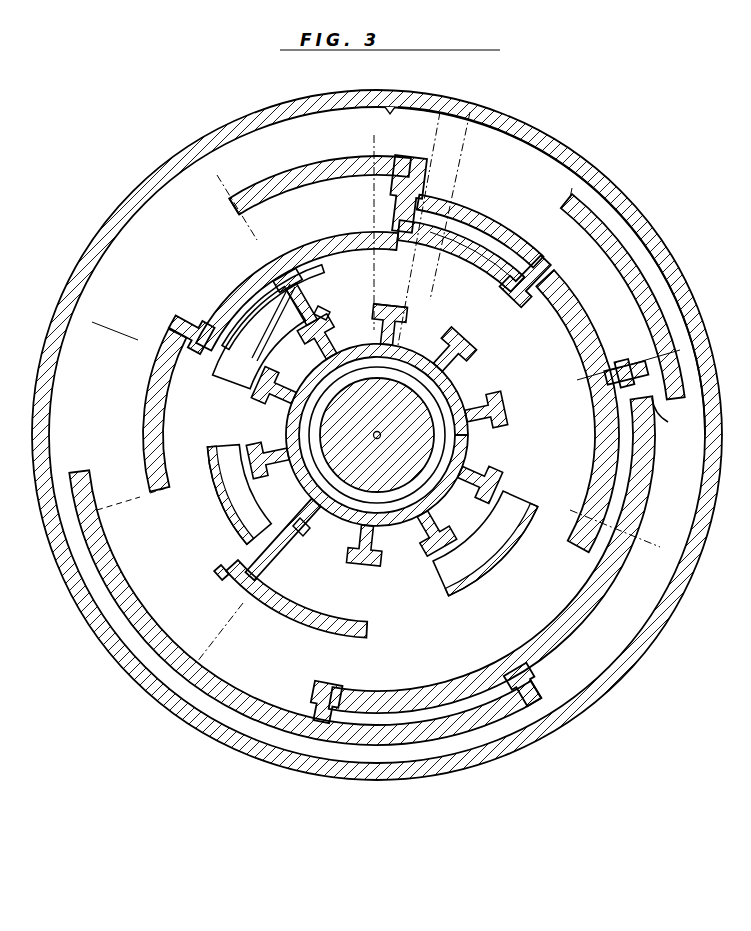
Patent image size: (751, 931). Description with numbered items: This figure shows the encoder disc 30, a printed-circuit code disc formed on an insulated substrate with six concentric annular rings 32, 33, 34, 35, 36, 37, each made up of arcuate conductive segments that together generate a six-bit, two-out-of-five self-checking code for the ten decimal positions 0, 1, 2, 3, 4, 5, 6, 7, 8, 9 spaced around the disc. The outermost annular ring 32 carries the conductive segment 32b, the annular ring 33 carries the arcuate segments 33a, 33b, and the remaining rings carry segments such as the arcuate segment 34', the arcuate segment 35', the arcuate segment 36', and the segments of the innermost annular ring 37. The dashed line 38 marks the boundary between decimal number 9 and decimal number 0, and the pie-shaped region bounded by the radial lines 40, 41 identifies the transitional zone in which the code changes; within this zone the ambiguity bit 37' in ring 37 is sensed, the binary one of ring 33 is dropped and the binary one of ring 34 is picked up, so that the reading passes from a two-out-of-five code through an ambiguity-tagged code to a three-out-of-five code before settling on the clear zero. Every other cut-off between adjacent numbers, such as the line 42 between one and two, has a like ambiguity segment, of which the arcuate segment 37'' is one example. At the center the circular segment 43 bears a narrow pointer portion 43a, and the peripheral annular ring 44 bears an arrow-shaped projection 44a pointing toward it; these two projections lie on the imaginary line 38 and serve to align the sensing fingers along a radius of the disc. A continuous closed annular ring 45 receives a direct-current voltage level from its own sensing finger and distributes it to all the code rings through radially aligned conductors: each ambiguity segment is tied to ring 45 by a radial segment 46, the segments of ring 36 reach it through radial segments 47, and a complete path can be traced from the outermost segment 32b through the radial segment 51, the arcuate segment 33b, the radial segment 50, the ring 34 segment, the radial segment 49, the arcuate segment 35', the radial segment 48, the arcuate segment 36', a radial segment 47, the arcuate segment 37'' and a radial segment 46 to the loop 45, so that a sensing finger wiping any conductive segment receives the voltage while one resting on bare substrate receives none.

The encoder disc 30 is at (370, 819).
The annular ring 32 is at (76, 468).
The conductive segment 32b is at (635, 288).
The annular ring 33 is at (233, 207).
The arcuate conductive segment 33a is at (330, 162).
The arcuate segment 33b is at (588, 620).
The annular ring 34 is at (149, 515).
The arcuate segment 34' is at (480, 231).
The annular ring 35 is at (179, 403).
The arcuate segment 35' is at (297, 279).
The annular ring 36 is at (290, 599).
The arcuate segment 36' is at (257, 307).
The annular ring 37 is at (295, 541).
The ambiguity bit 37' is at (367, 295).
The arcuate segment 37'' is at (345, 310).
The dashed line 38 is at (396, 148).
The radial line 40 is at (374, 134).
The radial line 41 is at (468, 154).
The line 42 is at (646, 360).
The circular segment 43 is at (356, 492).
The pointer portion 43a is at (372, 380).
The annular ring 44 is at (243, 124).
The arrow-shaped projection 44a is at (402, 107).
The annular ring 45 is at (312, 450).
The radial segments 46 is at (306, 340).
The radial segments 47 is at (264, 334).
The radial segment 48 is at (303, 273).
The radial segment 49 is at (505, 256).
The radial segment 50 is at (612, 432).
The radial segment 51 is at (672, 417).
The decimal number zero 0 is at (388, 122).
The decimal number one 1 is at (568, 185).
The decimal number two 2 is at (632, 362).
The decimal number three 3 is at (620, 538).
The decimal number four 4 is at (528, 689).
The decimal number five 5 is at (338, 723).
The decimal number six 6 is at (204, 651).
The decimal number seven 7 is at (98, 512).
The decimal number eight 8 is at (104, 325).
The decimal number nine 9 is at (230, 196).